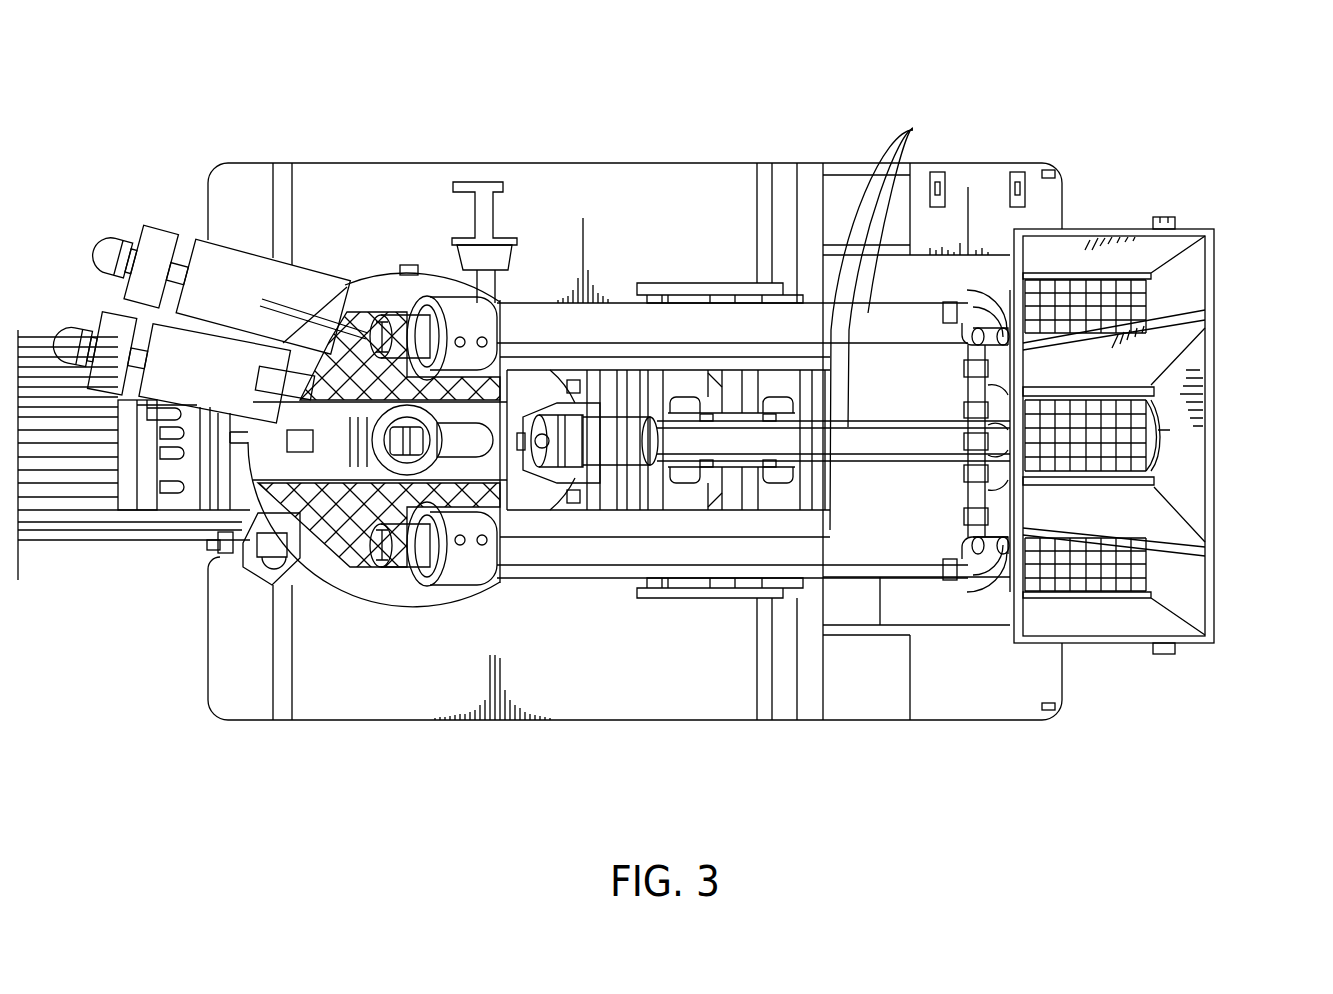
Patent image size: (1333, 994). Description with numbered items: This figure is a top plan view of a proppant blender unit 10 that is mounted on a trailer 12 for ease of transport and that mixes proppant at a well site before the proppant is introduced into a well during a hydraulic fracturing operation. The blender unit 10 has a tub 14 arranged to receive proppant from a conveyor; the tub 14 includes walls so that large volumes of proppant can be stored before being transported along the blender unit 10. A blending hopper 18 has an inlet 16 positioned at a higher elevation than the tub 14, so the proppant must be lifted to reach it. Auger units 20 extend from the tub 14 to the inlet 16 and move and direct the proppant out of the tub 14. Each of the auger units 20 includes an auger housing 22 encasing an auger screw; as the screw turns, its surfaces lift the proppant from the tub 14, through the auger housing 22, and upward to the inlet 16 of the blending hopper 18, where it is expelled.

The proppant blender unit 10 is at (621, 227).
The trailer 12 is at (687, 705).
The tub 14 is at (1218, 268).
The inlet 16 is at (342, 543).
The blending hopper 18 is at (405, 607).
The auger units 20 is at (683, 302).
The auger housing 22 is at (892, 324).